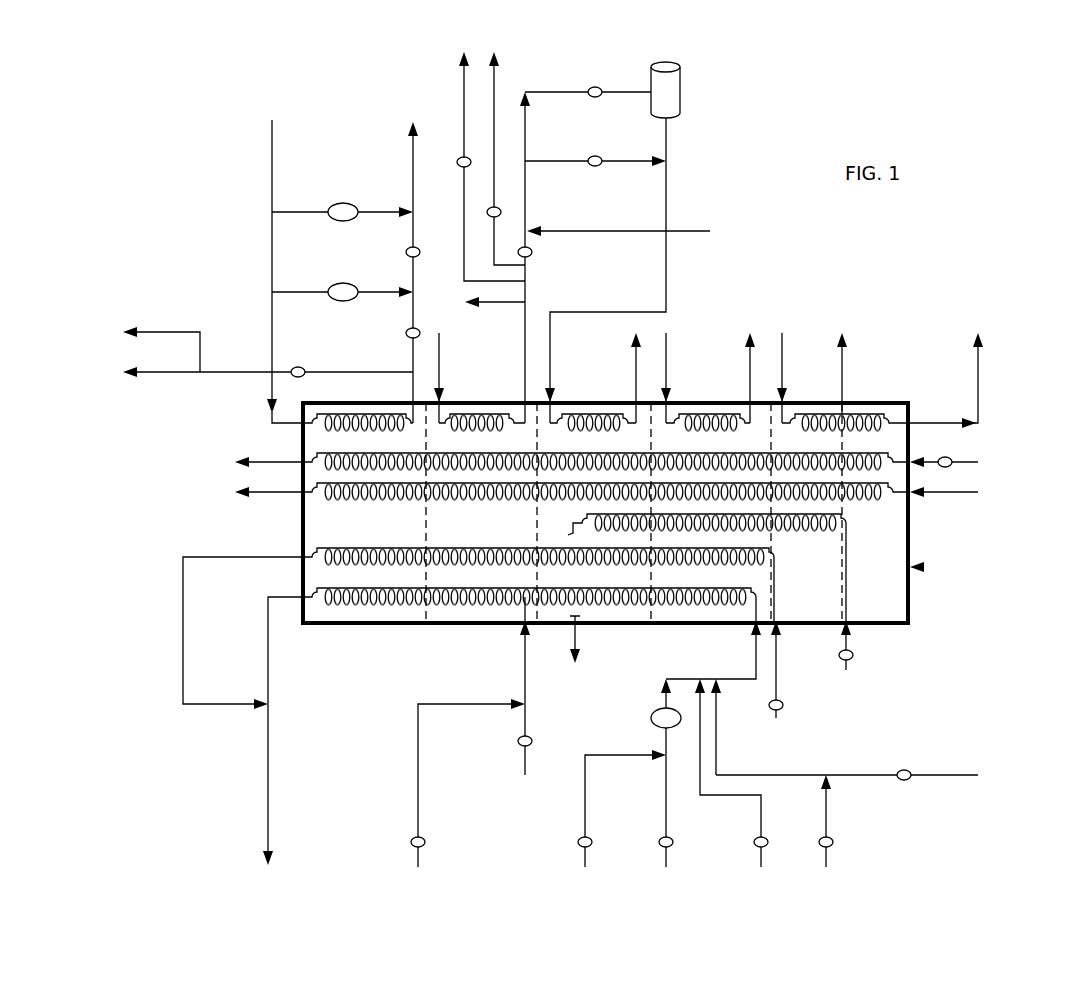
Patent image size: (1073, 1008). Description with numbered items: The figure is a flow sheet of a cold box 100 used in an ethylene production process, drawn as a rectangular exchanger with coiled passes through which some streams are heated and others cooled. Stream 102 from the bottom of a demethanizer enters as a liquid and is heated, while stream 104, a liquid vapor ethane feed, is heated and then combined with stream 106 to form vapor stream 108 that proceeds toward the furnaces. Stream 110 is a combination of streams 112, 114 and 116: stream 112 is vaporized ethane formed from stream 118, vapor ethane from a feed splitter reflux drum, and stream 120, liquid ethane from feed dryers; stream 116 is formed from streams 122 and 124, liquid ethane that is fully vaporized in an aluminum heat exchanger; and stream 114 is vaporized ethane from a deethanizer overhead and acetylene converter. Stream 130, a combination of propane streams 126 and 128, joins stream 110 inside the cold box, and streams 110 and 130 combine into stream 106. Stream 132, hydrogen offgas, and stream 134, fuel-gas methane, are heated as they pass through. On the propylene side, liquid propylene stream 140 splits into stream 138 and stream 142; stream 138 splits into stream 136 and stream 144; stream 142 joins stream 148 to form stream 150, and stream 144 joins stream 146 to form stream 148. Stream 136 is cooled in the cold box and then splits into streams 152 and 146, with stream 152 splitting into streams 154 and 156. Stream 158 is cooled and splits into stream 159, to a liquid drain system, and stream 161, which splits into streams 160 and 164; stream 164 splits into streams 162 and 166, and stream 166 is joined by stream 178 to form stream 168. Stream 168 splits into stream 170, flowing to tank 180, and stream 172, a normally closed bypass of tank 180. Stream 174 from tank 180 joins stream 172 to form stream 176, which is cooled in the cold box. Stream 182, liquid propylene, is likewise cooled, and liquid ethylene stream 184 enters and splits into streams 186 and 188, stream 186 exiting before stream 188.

The cold box 100 is at (915, 569).
The stream 102 is at (850, 648).
The stream 104 is at (780, 682).
The stream 106 is at (266, 634).
The stream 108 is at (266, 786).
The stream 110 is at (753, 648).
The stream 112 is at (718, 733).
The stream 114 is at (705, 800).
The stream 116 is at (660, 698).
The stream 118 is at (862, 773).
The stream 120 is at (832, 856).
The stream 122 is at (663, 790).
The stream 124 is at (583, 792).
The stream 126 is at (522, 766).
The stream 128 is at (472, 708).
The stream 130 is at (522, 664).
The stream 132 is at (942, 496).
The stream 134 is at (972, 458).
The stream 136 is at (270, 392).
The stream 138 is at (270, 262).
The stream 140 is at (270, 166).
The stream 142 is at (386, 206).
The stream 144 is at (386, 286).
The stream 146 is at (411, 308).
The stream 148 is at (415, 280).
The stream 150 is at (411, 148).
The stream 152 is at (314, 370).
The stream 154 is at (166, 330).
The stream 156 is at (166, 378).
The stream 158 is at (440, 366).
The stream 159 is at (490, 304).
The stream 160 is at (462, 80).
The stream 161 is at (527, 300).
The stream 162 is at (497, 80).
The stream 164 is at (527, 272).
The stream 166 is at (534, 254).
The stream 168 is at (527, 212).
The stream 170 is at (527, 148).
The stream 172 is at (636, 160).
The stream 174 is at (668, 142).
The stream 176 is at (668, 194).
The stream 178 is at (690, 232).
The tank 180 is at (684, 78).
The stream 182 is at (668, 362).
The stream 184 is at (783, 333).
The stream 186 is at (844, 372).
The stream 188 is at (932, 420).